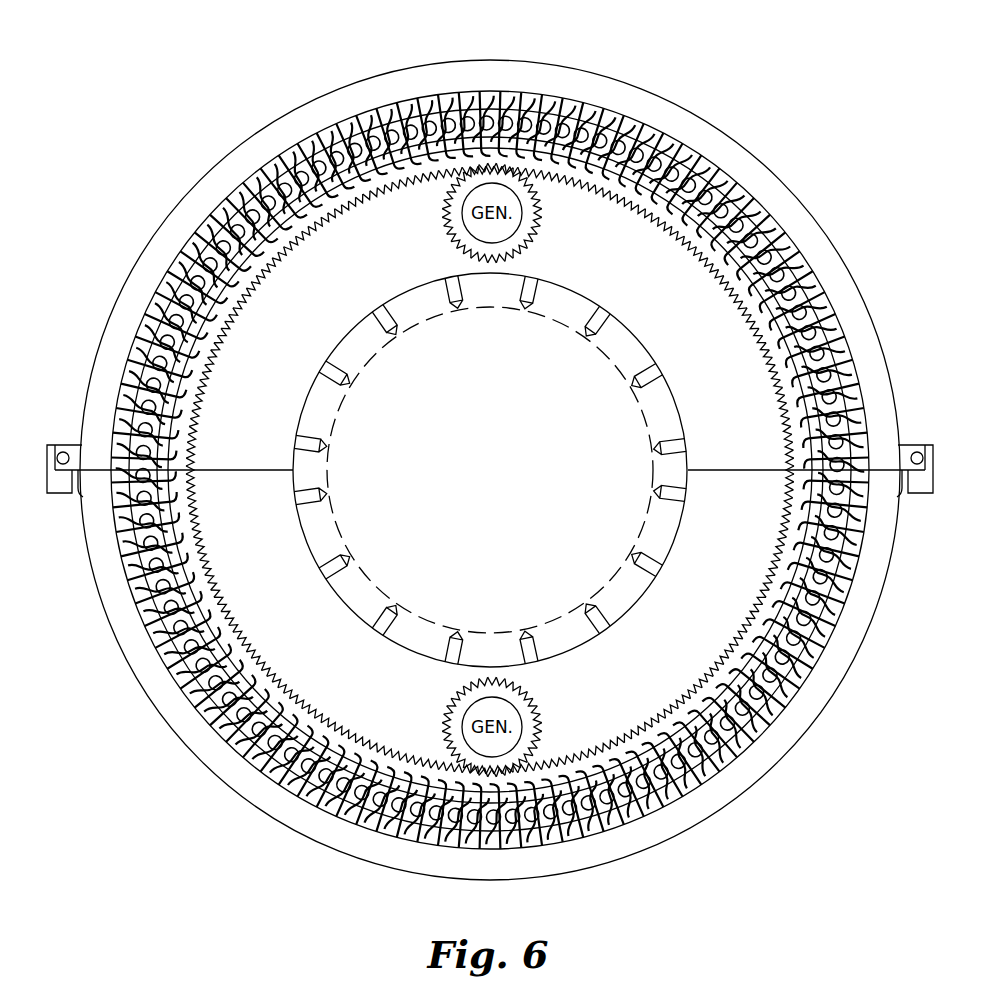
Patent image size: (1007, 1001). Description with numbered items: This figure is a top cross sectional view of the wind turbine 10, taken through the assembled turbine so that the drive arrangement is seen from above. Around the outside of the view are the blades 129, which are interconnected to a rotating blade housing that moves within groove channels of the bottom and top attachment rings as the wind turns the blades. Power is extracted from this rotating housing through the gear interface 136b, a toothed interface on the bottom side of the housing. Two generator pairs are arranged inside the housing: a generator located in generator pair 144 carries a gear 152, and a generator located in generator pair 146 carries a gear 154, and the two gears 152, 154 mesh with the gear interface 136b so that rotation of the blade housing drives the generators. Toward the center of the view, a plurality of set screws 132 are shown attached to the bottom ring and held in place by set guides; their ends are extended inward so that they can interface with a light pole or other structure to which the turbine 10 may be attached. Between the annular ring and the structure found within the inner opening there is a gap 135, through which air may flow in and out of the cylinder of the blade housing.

The turbine 10 is at (835, 757).
The blades 129 is at (650, 812).
The set screws 132 is at (392, 607).
The gap 135 is at (350, 600).
The gear interface 136b is at (698, 168).
The generator pair 144 is at (450, 775).
The generator pair 146 is at (485, 193).
The gear 152 is at (540, 757).
The gear 154 is at (533, 200).